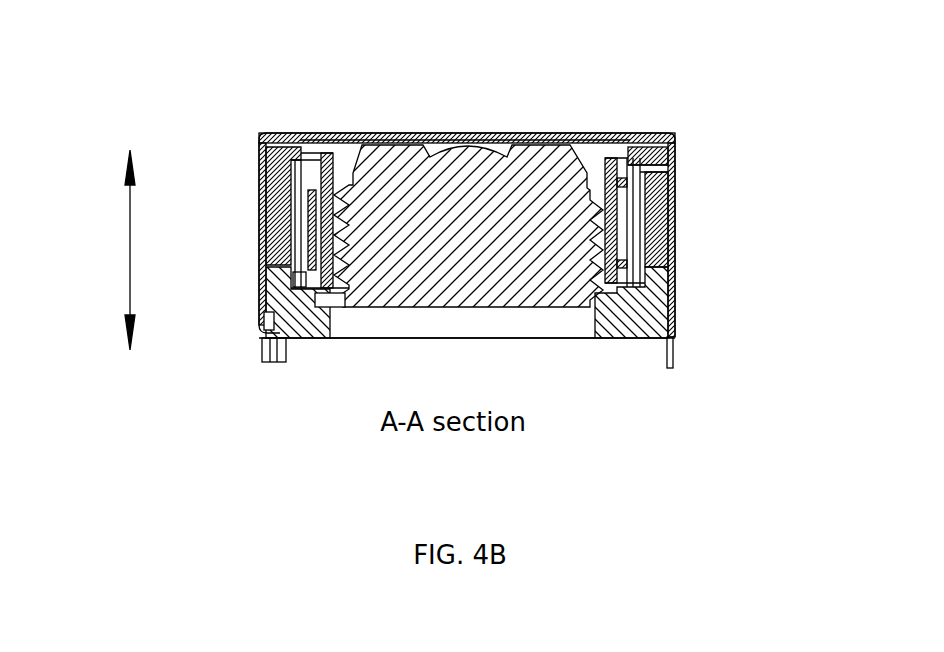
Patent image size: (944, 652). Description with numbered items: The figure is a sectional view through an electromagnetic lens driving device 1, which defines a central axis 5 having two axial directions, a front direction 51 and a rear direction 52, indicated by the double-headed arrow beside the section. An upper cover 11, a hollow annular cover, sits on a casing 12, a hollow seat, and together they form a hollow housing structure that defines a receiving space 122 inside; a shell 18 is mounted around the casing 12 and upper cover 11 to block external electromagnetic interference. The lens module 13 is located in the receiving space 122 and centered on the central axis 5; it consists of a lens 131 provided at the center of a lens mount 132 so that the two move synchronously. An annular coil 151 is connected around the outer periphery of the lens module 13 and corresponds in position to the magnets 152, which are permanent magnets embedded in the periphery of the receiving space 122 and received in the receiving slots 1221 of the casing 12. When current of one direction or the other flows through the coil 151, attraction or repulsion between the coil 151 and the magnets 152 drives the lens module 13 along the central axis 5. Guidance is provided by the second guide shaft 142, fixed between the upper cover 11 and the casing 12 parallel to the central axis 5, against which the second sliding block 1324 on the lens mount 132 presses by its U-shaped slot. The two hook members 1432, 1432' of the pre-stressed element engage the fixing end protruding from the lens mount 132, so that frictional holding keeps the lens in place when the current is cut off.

The electromagnetic lens driving device 1 is at (268, 93).
The central axis 5 is at (130, 250).
The front direction 51 is at (130, 180).
The rear direction 52 is at (130, 337).
The upper cover 11 is at (677, 145).
The casing 12 is at (677, 337).
The receiving space 122 is at (553, 325).
The lens module 13 is at (564, 160).
The lens 131 is at (552, 150).
The lens mount 132 is at (620, 141).
The second guide shaft 142 is at (298, 217).
The coil 151 is at (300, 192).
The magnets 152 is at (270, 177).
The receiving slots 1221 is at (270, 295).
The second sliding block 1324 is at (306, 248).
The hook member 1432 is at (736, 164).
The hook member 1432' is at (729, 295).
The shell 18 is at (677, 183).